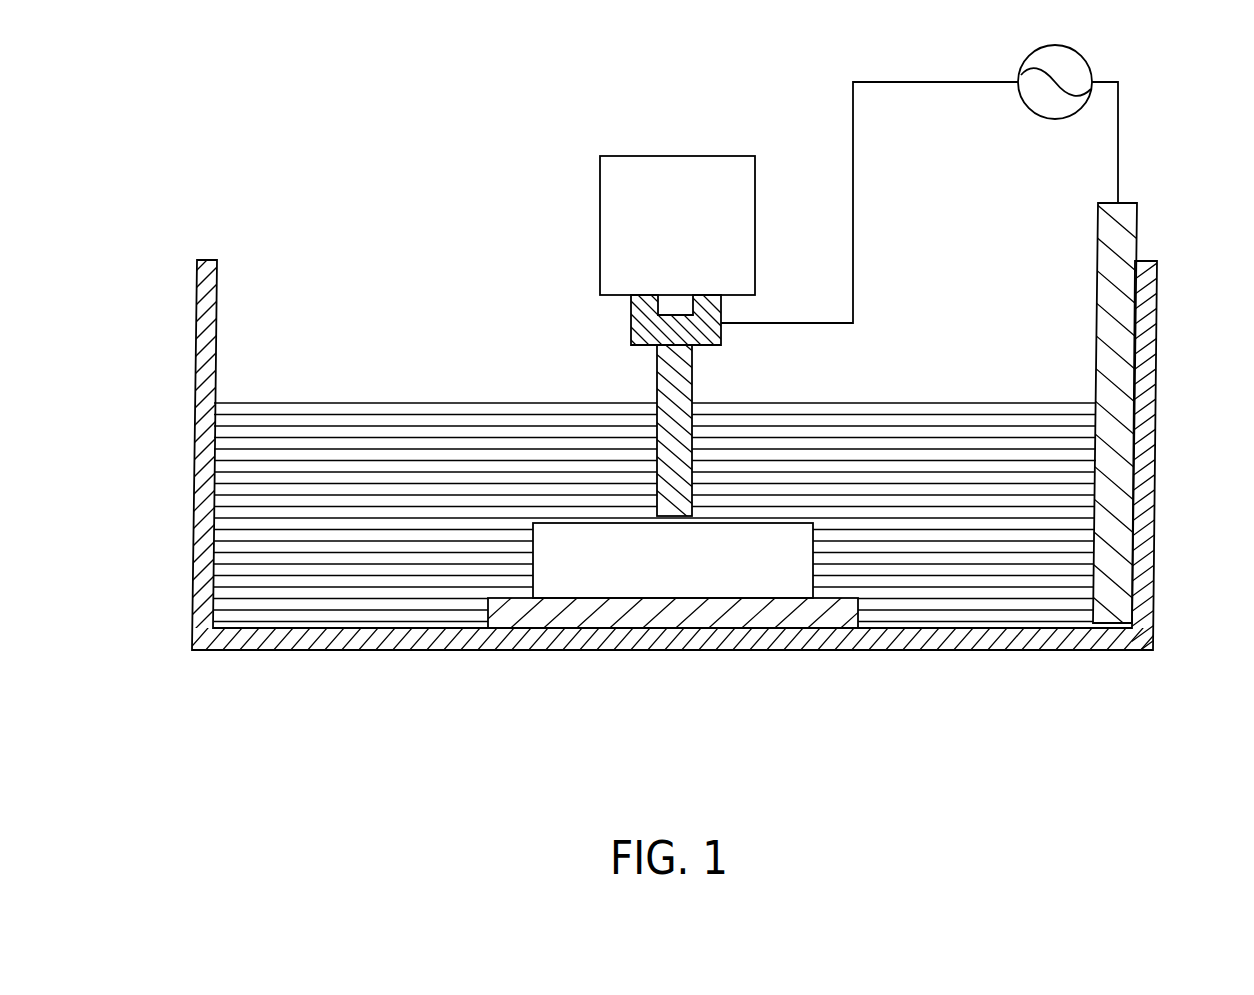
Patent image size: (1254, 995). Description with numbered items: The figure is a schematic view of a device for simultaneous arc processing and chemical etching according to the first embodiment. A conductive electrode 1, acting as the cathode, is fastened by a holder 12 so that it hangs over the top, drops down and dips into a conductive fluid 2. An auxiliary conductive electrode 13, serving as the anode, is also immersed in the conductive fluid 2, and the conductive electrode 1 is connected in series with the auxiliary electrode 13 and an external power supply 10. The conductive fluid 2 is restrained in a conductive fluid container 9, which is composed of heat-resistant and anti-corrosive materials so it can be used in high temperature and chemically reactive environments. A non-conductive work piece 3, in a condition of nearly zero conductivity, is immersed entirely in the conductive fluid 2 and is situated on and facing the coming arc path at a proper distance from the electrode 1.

The conductive electrode 1 is at (628, 438).
The conductive fluid 2 is at (1046, 508).
The non-conductive work piece 3 is at (782, 573).
The conductive fluid container 9 is at (219, 287).
The external power supply 10 is at (1027, 105).
The holder 12 is at (565, 221).
The auxiliary conductive electrode 13 is at (1107, 288).